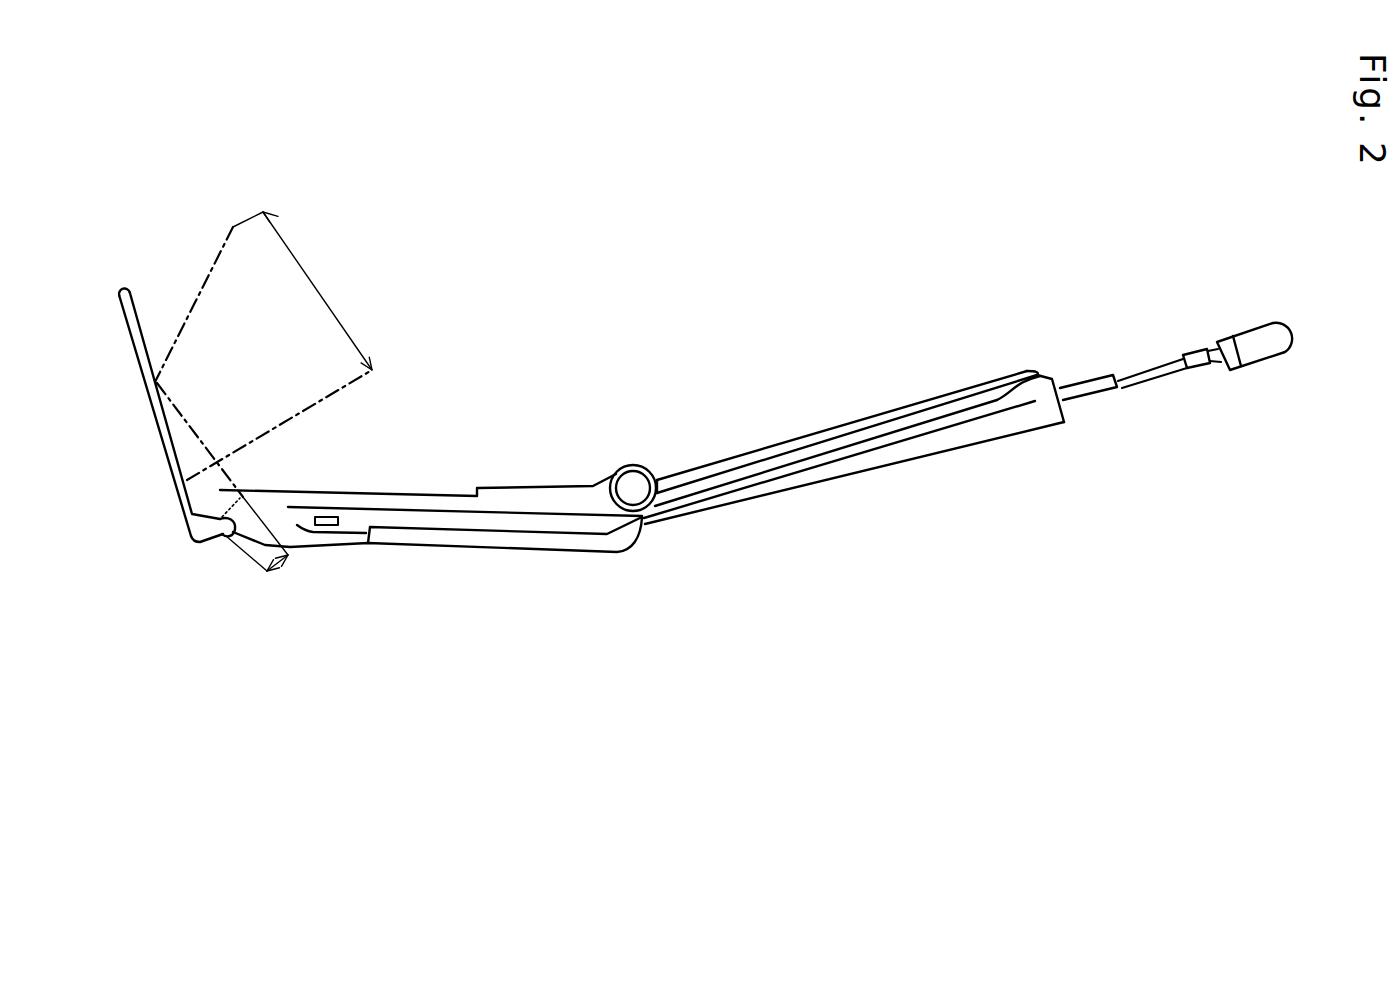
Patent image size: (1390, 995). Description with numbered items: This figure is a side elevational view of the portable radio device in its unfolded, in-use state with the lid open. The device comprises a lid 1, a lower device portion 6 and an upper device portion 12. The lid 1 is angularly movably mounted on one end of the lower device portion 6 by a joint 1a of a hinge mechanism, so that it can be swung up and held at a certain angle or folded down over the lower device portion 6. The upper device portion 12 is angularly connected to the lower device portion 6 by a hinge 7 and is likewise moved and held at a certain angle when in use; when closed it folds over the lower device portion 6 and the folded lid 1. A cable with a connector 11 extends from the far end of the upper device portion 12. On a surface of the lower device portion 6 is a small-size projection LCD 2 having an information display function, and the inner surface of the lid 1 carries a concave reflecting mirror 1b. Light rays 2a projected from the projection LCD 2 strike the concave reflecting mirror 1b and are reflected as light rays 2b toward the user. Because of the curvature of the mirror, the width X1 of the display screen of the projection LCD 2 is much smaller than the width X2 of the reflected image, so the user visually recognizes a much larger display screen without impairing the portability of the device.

The lid 1 is at (121, 320).
The joint 1a is at (225, 541).
The concave reflecting mirror 1b is at (170, 427).
The projection LCD 2 is at (215, 519).
The light rays 2a is at (217, 462).
The light rays 2b is at (204, 278).
The lower device portion 6 is at (431, 550).
The hinge 7 is at (632, 484).
The connector plug 11 is at (1260, 360).
The upper device portion 12 is at (867, 473).
The width of light rays X1 is at (281, 563).
The width of reflected image X2 is at (313, 284).